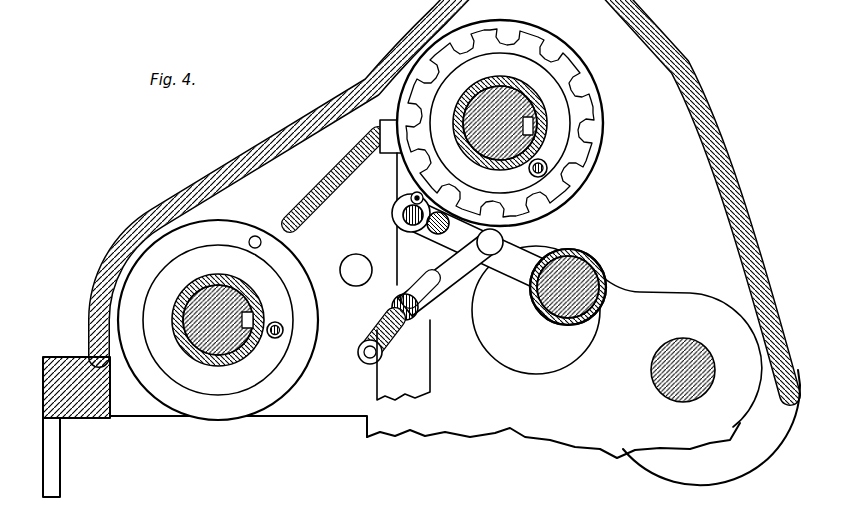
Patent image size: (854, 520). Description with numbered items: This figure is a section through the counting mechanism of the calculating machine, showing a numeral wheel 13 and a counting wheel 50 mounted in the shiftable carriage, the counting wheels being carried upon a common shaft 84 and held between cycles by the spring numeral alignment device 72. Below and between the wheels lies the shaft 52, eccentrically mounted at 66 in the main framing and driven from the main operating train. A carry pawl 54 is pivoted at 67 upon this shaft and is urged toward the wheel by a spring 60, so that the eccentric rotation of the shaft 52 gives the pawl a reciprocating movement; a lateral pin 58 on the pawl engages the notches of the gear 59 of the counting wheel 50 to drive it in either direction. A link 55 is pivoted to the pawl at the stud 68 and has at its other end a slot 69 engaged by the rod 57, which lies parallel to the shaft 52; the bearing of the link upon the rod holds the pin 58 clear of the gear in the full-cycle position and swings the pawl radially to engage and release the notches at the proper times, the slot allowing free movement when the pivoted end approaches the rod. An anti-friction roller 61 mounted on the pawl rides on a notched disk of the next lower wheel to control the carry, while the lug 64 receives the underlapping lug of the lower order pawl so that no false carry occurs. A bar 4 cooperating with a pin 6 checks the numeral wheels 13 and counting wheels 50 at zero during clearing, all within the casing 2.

The casing 2 is at (707, 97).
The bar 4 is at (290, 195).
The pin 6 is at (253, 237).
The numeral wheels 13 is at (167, 247).
The counting wheels 50 is at (587, 157).
The shaft 52 is at (597, 272).
The pawls 54 is at (547, 247).
The links 55 is at (445, 298).
The rod 57 is at (418, 318).
The lateral pins 58 is at (410, 195).
The gears 59 is at (560, 38).
The springs 60 is at (397, 343).
The anti-friction rollers 61 is at (393, 212).
The lugs 64 is at (427, 250).
The eccentric mounting 66 is at (593, 340).
The pivot 67 is at (603, 297).
The pivoted connection 68 is at (498, 250).
The slots 69 is at (398, 290).
The spring numeral alignment devices 72 is at (548, 170).
The common shaft 84 is at (537, 110).